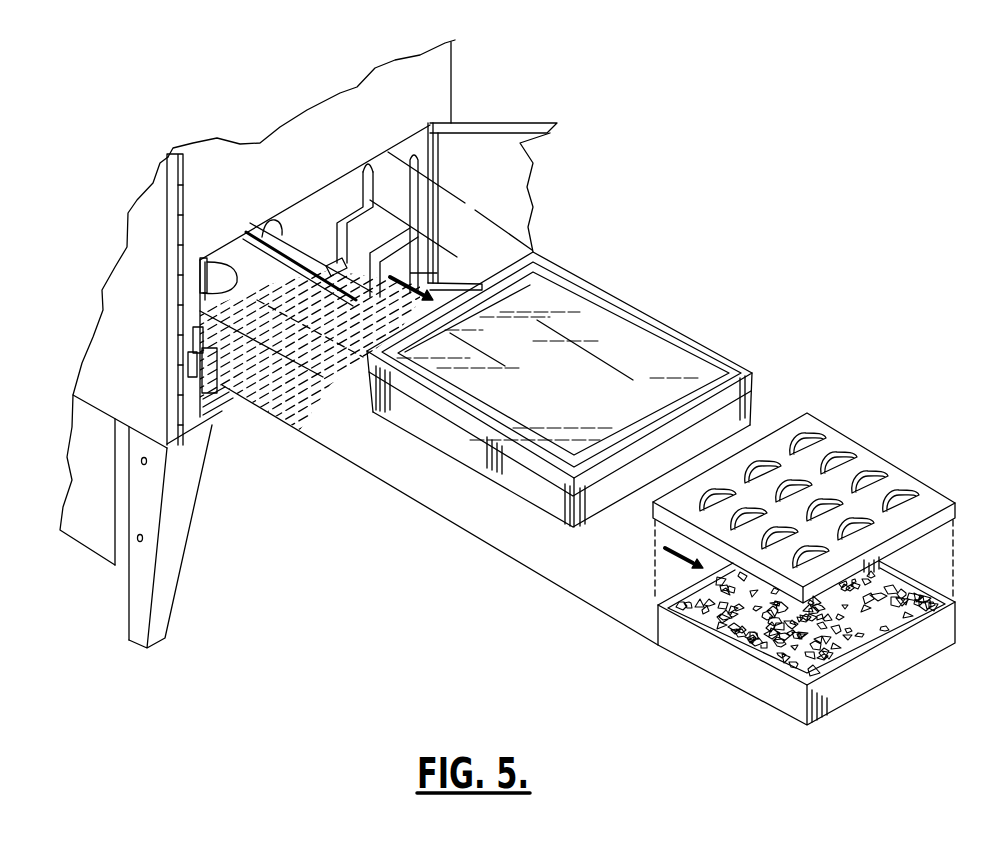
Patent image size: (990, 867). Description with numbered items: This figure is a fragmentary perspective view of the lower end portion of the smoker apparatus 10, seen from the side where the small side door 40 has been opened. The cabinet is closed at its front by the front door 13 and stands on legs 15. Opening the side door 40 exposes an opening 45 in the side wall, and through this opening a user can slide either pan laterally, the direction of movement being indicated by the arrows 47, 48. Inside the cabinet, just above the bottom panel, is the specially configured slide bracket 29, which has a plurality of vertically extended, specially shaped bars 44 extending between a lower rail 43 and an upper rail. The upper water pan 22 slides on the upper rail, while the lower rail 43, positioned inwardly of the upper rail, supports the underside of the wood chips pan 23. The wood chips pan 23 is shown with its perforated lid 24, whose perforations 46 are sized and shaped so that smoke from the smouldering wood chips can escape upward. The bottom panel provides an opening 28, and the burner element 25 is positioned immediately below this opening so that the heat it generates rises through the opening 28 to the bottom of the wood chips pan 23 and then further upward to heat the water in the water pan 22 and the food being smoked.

The smoker apparatus 10 is at (208, 112).
The front door 13 is at (118, 323).
The legs 15 is at (177, 543).
The water pan 22 is at (692, 345).
The wood chips pan 23 is at (767, 692).
The perforated lid 24 is at (804, 492).
The burner element 25 is at (207, 258).
The opening 28 is at (240, 265).
The slide bracket 29 is at (412, 152).
The side door 40 is at (488, 150).
The lower rail 43 is at (338, 305).
The bars 44 is at (340, 246).
The opening 45 is at (312, 215).
The perforations 46 is at (907, 500).
The arrow 47 is at (440, 272).
The arrow 48 is at (652, 537).